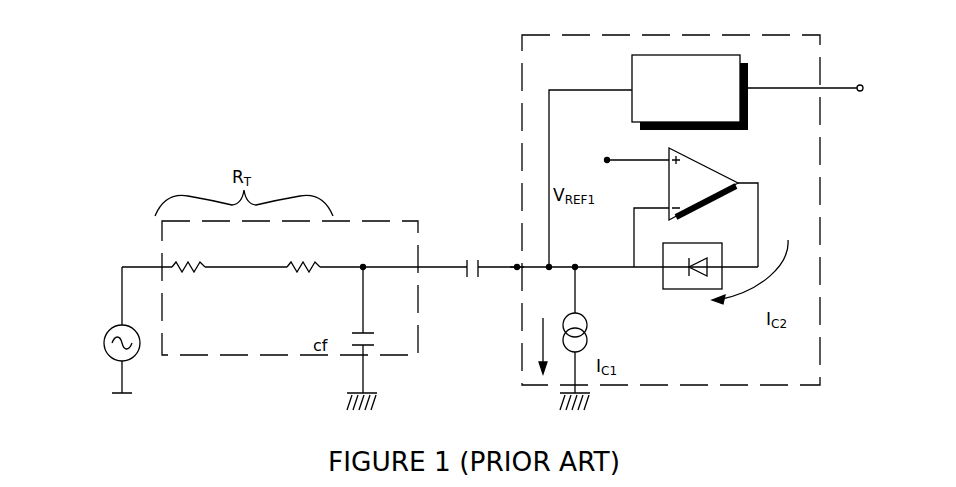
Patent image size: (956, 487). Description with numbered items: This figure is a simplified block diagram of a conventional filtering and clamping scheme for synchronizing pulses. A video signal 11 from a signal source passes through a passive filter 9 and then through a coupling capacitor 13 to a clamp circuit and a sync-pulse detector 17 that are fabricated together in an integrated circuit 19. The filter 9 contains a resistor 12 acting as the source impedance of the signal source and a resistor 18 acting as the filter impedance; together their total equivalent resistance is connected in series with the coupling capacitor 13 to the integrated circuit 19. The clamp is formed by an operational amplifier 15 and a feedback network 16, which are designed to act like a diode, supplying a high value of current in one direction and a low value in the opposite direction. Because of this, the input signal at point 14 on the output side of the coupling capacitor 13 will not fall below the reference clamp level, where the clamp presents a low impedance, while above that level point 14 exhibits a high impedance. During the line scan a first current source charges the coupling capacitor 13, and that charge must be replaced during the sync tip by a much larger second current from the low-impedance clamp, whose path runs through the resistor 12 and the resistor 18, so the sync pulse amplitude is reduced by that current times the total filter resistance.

The passive filter 9 is at (255, 357).
The video signal 11 is at (110, 326).
The resistor 12 is at (190, 271).
The coupling capacitor 13 is at (473, 276).
The input signal point 14 is at (512, 277).
The operational amplifier 15 is at (702, 176).
The feedback network 16 is at (672, 290).
The sync-pulse detector 17 is at (631, 68).
The resistor 18 is at (302, 271).
The integrated circuit 19 is at (521, 103).